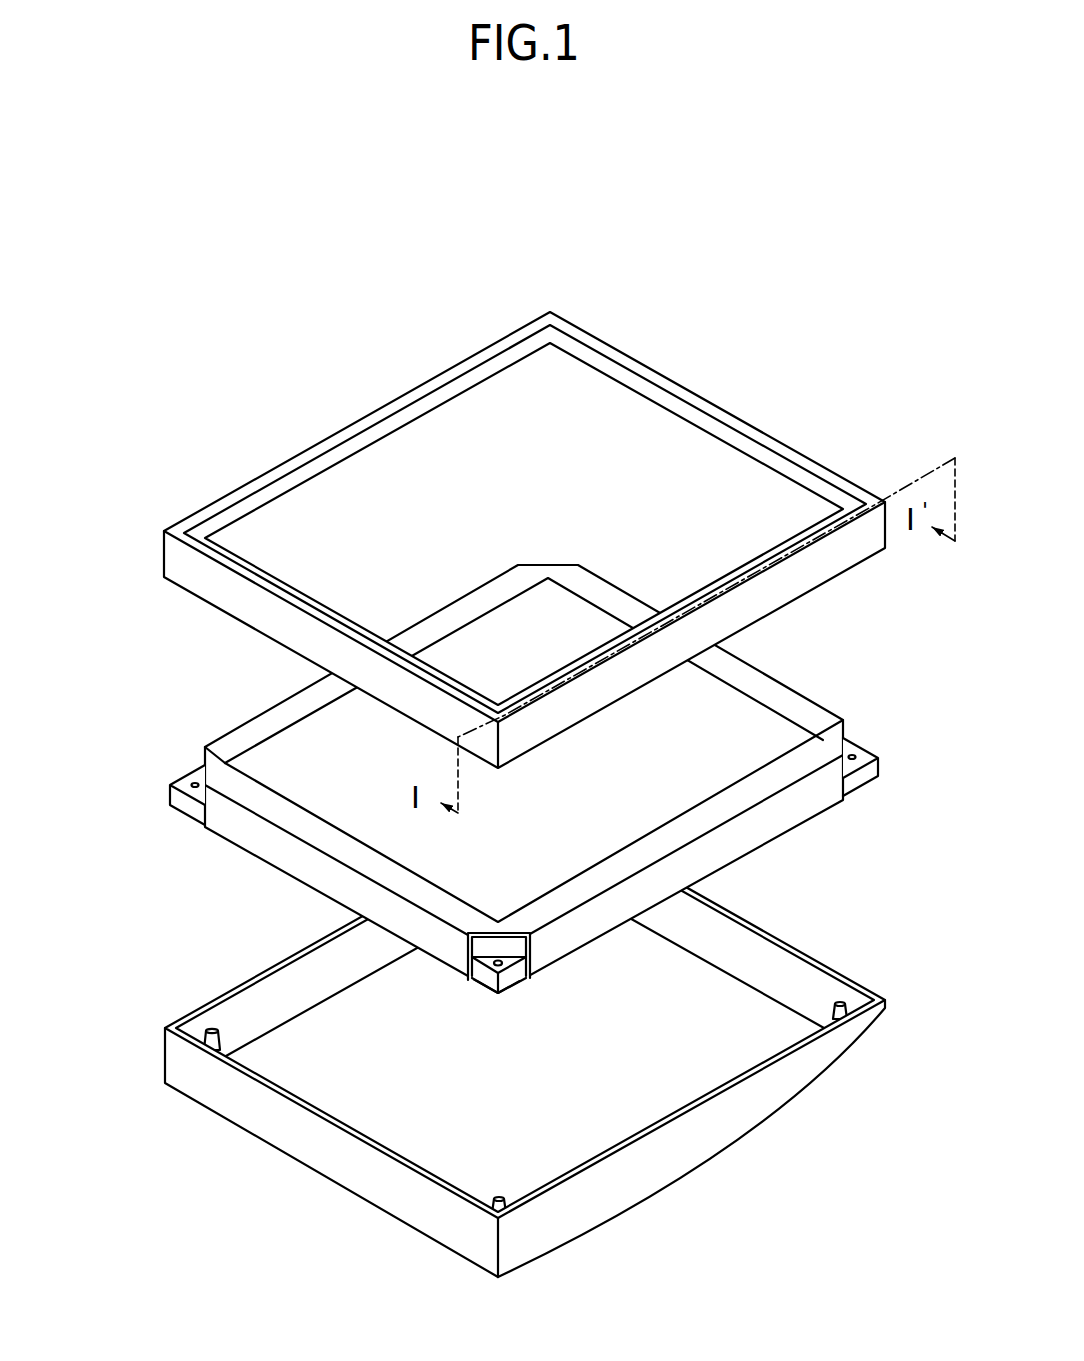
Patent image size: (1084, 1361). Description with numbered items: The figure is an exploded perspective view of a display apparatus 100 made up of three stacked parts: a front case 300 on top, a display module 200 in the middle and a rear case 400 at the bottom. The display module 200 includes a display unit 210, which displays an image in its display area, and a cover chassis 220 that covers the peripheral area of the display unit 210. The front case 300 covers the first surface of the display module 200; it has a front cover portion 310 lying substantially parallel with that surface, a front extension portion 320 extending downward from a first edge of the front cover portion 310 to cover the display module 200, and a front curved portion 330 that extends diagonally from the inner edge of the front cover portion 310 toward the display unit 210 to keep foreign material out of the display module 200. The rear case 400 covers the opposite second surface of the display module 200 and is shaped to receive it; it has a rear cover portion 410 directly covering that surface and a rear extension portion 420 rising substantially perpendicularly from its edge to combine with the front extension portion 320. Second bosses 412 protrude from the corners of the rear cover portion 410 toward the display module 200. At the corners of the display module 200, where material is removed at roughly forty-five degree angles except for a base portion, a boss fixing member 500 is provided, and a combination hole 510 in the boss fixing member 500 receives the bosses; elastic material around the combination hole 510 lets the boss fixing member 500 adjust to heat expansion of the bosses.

The display apparatus 100 is at (600, 242).
The display module 200 is at (229, 869).
The display unit 210 is at (323, 770).
The cover chassis 220 is at (280, 720).
The front case 300 is at (145, 542).
The front cover portion 310 is at (297, 460).
The front extension portion 320 is at (193, 580).
The front curved portion 330 is at (383, 428).
The rear case 400 is at (148, 1048).
The rear cover portion 410 is at (378, 1092).
The second boss 412 is at (841, 1002).
The rear extension portion 420 is at (380, 1190).
The boss fixing member 500 is at (875, 790).
The combination hole 510 is at (853, 757).